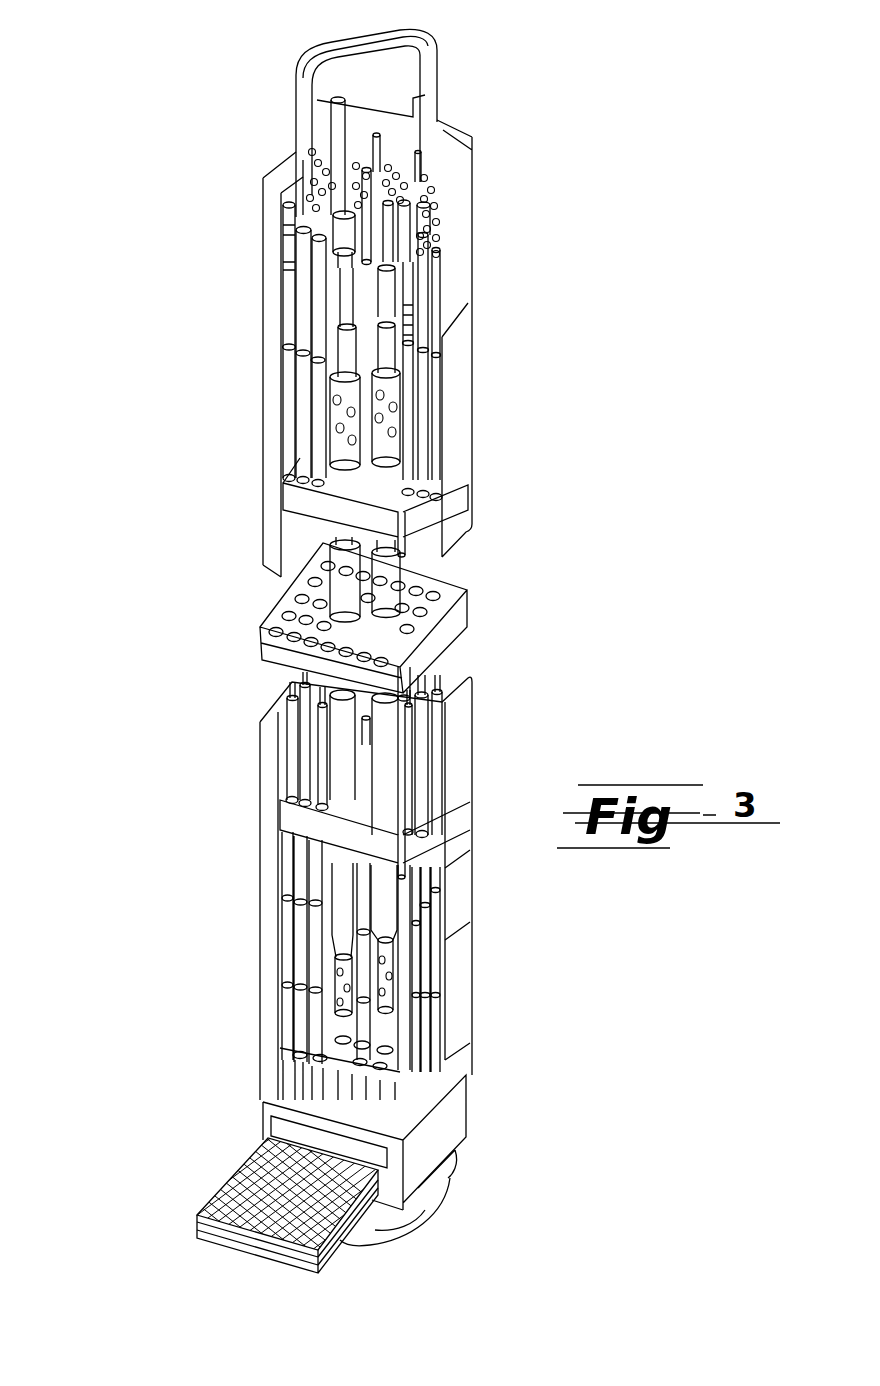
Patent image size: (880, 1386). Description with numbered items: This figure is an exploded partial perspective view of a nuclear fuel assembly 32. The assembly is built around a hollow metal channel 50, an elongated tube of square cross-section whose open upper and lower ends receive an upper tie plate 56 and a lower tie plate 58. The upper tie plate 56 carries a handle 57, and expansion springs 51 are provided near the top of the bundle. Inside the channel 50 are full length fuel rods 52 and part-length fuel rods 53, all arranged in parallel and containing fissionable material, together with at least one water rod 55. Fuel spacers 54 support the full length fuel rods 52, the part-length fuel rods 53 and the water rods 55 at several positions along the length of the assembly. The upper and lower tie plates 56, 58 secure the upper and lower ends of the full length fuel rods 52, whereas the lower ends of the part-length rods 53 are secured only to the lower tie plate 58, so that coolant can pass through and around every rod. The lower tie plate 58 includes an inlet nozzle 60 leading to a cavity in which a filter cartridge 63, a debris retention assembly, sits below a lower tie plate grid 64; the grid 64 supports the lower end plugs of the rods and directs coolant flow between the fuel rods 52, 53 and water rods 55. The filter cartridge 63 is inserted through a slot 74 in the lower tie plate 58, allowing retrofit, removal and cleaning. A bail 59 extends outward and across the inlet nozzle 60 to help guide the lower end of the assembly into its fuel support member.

The fuel assembly 32 is at (634, 463).
The handle 57 is at (322, 52).
The hollow metal channel 50 is at (272, 463).
The expansion springs 51 is at (443, 304).
The upper tie plate 56 is at (370, 230).
The full length fuel rods 52 is at (315, 410).
The water rods 55 is at (337, 438).
The fuel spacers 54 is at (312, 503).
The part-length fuel rods 53 is at (293, 730).
The lower tie plate grid 64 is at (383, 1025).
The lower tie plate 58 is at (455, 1122).
The slot 74 is at (261, 1121).
The filter cartridge 63 is at (225, 1185).
The inlet nozzle 60 is at (400, 1262).
The bail 59 is at (352, 1260).